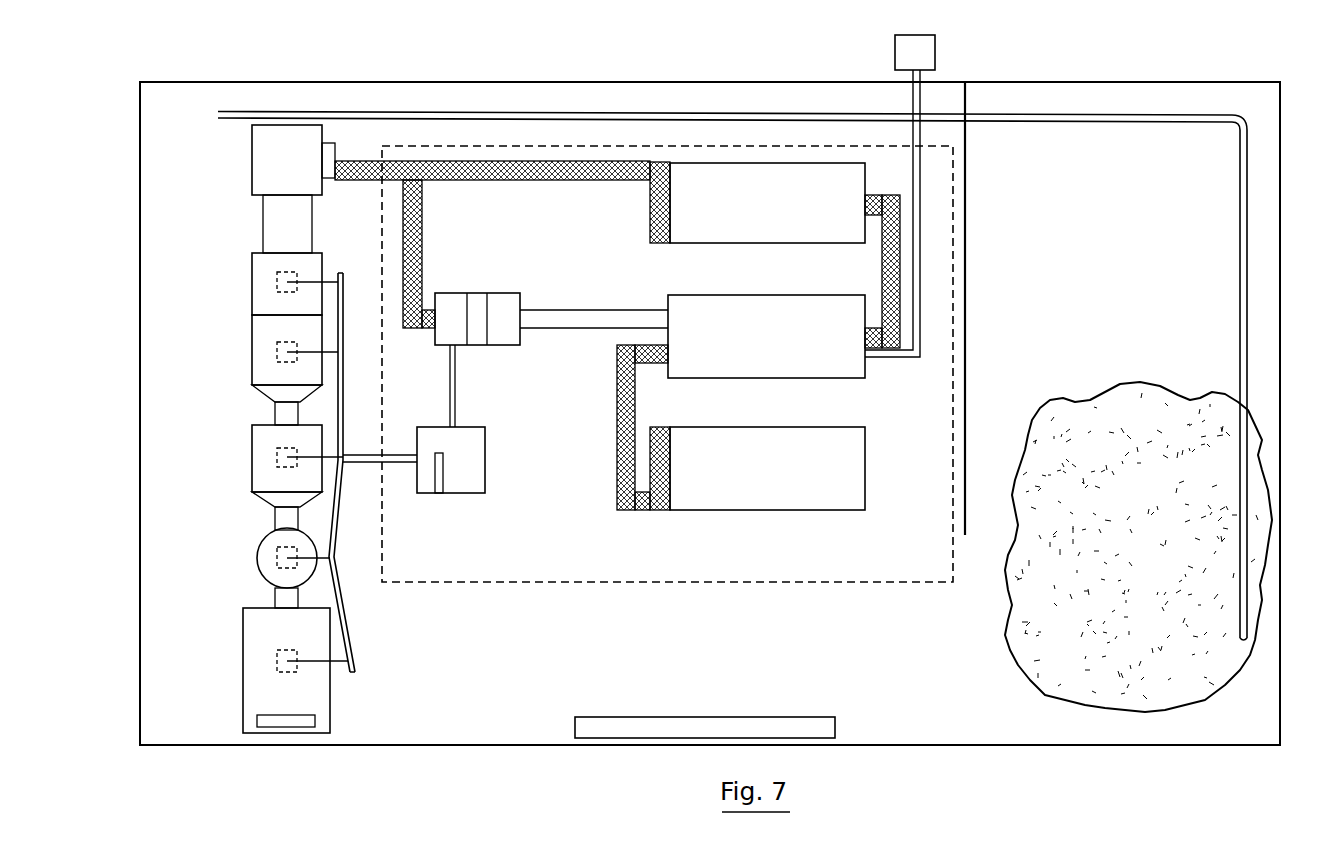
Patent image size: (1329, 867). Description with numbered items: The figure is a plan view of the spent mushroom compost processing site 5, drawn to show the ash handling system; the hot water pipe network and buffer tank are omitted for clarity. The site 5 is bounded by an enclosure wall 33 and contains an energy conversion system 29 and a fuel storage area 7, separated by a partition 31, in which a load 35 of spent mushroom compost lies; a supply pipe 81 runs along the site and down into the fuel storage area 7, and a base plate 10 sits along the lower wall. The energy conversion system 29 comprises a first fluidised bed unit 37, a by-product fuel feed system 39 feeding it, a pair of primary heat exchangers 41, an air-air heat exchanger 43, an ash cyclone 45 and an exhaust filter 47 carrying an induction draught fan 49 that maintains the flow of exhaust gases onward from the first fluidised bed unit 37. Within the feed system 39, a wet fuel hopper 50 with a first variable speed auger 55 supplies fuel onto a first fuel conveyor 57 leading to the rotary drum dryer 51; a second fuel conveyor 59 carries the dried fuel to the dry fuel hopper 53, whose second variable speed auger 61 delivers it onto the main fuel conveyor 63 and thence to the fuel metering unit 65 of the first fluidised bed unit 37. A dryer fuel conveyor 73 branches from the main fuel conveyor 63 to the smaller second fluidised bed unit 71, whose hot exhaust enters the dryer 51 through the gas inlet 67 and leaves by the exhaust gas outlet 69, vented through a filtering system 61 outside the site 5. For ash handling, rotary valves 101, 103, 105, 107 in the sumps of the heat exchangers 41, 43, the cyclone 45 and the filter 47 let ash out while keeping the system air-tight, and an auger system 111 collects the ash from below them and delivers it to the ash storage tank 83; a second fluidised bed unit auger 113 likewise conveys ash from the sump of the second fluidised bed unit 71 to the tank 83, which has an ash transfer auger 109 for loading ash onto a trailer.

The spent mushroom compost processing site 5 is at (528, 62).
The fuel storage area 7 is at (1139, 332).
The base plate 10 is at (690, 717).
The energy conversion system 29 is at (504, 622).
The partition wall 31 is at (967, 298).
The enclosure wall 33 is at (1282, 210).
The load of spent mushroom compost 35 is at (1050, 638).
The first fluidised bed unit 37 is at (300, 173).
The by-product fuel feed system 39 is at (753, 582).
The primary heat exchangers 41 is at (258, 262).
The air-air heat exchanger 43 is at (263, 480).
The ash cyclone 45 is at (268, 548).
The exhaust filter 47 is at (265, 680).
The induction draught fan 49 is at (300, 718).
The wet fuel hopper 50 is at (770, 480).
The rotary drum dryer 51 is at (770, 348).
The dry fuel hopper 53 is at (770, 215).
The first variable speed auger 55 is at (655, 510).
The first fuel conveyor 57 is at (617, 447).
The second fuel conveyor 59 is at (882, 342).
The second variable speed auger 61 is at (658, 222).
The main fuel conveyor 63 is at (463, 175).
The fuel metering unit 65 is at (328, 167).
The gas inlet 67 is at (590, 322).
The exhaust gas outlet 69 is at (908, 357).
The second fluidised bed unit 71 is at (502, 305).
The dryer fuel conveyor 73 is at (413, 256).
The supply pipe 81 is at (1068, 122).
The ash storage tank 83 is at (470, 443).
The rotary valves 101 is at (277, 284).
The rotary valve 103 is at (277, 457).
The rotary valve 105 is at (282, 567).
The rotary valve 107 is at (277, 655).
The ash transfer auger 109 is at (432, 490).
The auger system 111 is at (337, 537).
The second fluidised bed unit auger 113 is at (452, 383).